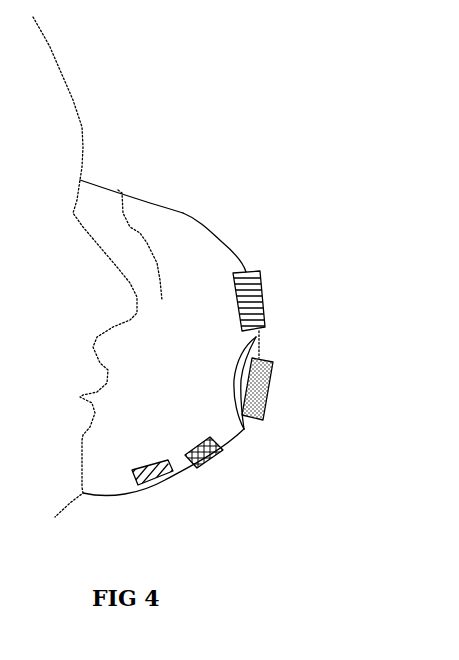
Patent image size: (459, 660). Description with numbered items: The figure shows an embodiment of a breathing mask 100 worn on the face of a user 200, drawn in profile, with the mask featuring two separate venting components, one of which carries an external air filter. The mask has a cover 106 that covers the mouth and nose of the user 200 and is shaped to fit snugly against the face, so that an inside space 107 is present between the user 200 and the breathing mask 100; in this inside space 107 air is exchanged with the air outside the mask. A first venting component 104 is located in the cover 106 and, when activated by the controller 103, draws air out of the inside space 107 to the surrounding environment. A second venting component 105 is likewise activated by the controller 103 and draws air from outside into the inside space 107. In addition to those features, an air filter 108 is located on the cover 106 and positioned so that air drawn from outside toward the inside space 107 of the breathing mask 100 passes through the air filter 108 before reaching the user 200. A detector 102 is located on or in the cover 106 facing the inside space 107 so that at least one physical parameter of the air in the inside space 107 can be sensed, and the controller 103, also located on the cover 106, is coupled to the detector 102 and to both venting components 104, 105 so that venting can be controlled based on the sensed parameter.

The breathing mask 100 is at (291, 146).
The detector 102 is at (137, 467).
The controller 103 is at (187, 447).
The first venting component 104 is at (265, 315).
The second venting component 105 is at (270, 403).
The cover 106 is at (243, 255).
The inside space 107 is at (118, 190).
The air filter 108 is at (263, 350).
The user 200 is at (48, 39).